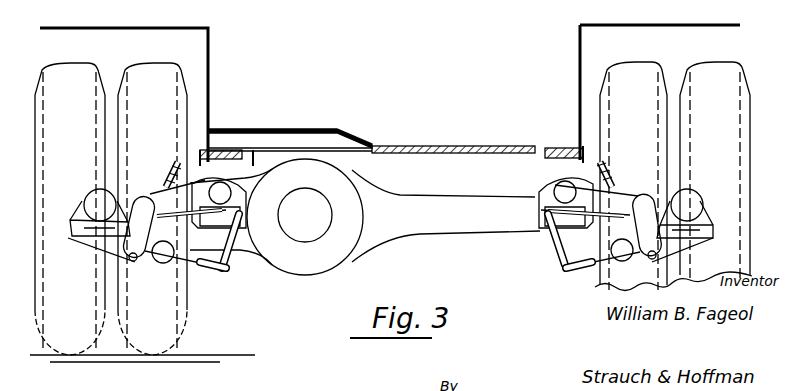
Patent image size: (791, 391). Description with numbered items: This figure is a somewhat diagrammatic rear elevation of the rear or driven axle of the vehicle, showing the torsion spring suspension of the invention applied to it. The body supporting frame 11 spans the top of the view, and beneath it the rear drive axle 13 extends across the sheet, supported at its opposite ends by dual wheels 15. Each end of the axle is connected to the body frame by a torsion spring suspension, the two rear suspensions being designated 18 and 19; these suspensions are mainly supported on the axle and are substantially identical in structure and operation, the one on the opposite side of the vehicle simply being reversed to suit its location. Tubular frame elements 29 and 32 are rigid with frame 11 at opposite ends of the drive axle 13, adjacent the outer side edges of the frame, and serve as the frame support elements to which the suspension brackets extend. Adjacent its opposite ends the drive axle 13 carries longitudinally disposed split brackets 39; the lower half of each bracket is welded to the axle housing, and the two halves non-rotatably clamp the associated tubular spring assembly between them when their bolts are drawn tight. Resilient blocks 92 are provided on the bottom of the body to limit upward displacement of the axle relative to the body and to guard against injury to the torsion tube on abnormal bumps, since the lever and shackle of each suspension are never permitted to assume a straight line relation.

The body supporting frame 11 is at (526, 156).
The rear drive axle 13 is at (449, 226).
The dual wheels 15 is at (171, 72).
The torsion spring suspension 18 is at (246, 180).
The torsion spring suspension 19 is at (537, 187).
The tubular frame element 29 is at (90, 197).
The tubular frame element 32 is at (700, 196).
The split bracket 39 is at (541, 218).
The resilient block 92 is at (560, 147).